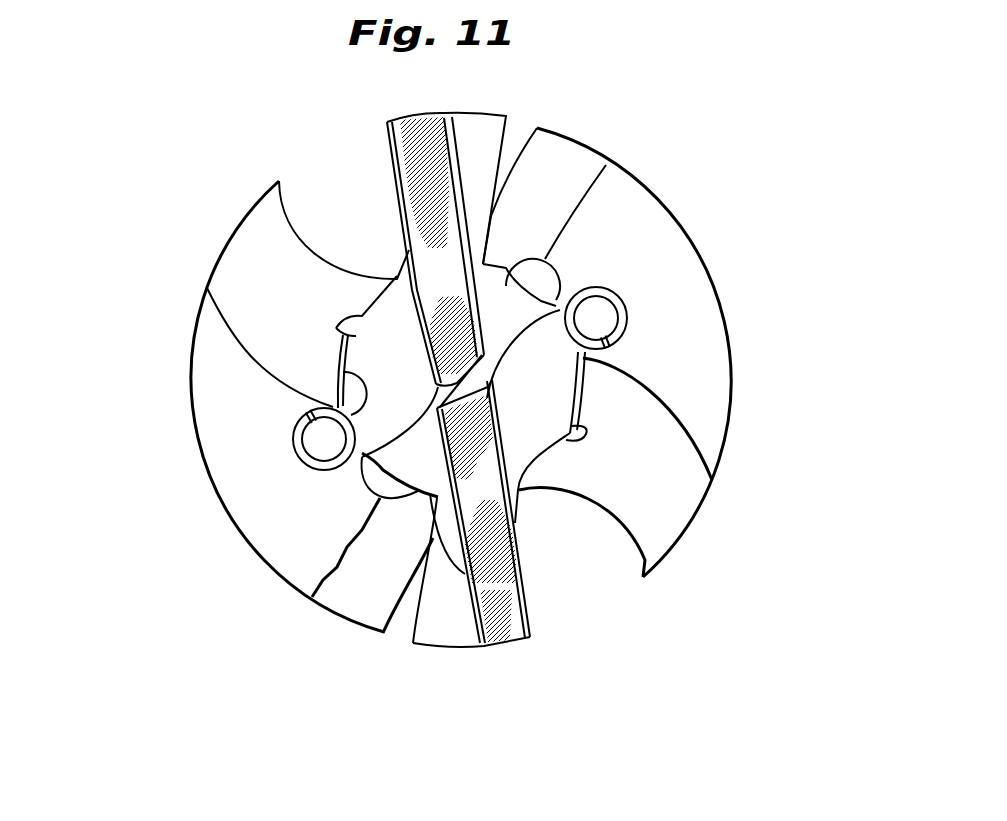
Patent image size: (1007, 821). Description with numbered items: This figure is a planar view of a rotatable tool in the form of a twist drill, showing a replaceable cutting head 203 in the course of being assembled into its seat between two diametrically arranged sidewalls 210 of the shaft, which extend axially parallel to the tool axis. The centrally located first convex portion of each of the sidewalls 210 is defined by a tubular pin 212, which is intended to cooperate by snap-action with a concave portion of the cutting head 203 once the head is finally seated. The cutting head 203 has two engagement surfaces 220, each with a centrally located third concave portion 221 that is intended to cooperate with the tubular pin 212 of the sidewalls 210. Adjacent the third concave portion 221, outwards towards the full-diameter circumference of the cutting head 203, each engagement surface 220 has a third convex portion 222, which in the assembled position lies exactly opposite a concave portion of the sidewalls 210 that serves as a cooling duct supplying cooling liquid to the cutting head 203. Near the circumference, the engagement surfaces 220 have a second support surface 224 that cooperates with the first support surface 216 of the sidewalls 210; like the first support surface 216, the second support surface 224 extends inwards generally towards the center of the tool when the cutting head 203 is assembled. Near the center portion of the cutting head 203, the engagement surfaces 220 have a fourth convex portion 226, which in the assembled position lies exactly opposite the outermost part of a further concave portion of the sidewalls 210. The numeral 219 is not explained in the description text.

The replaceable cutting head 203 is at (468, 658).
The sidewalls 210 is at (250, 455).
The tubular pin 212 is at (340, 373).
The first support surface 216 is at (383, 633).
The shaft flat 219 is at (536, 597).
The engagement surfaces 220 is at (377, 482).
The third concave portion 221 is at (385, 465).
The third convex portion 222 is at (487, 580).
The second support surface 224 is at (413, 636).
The fourth convex portion 226 is at (336, 392).